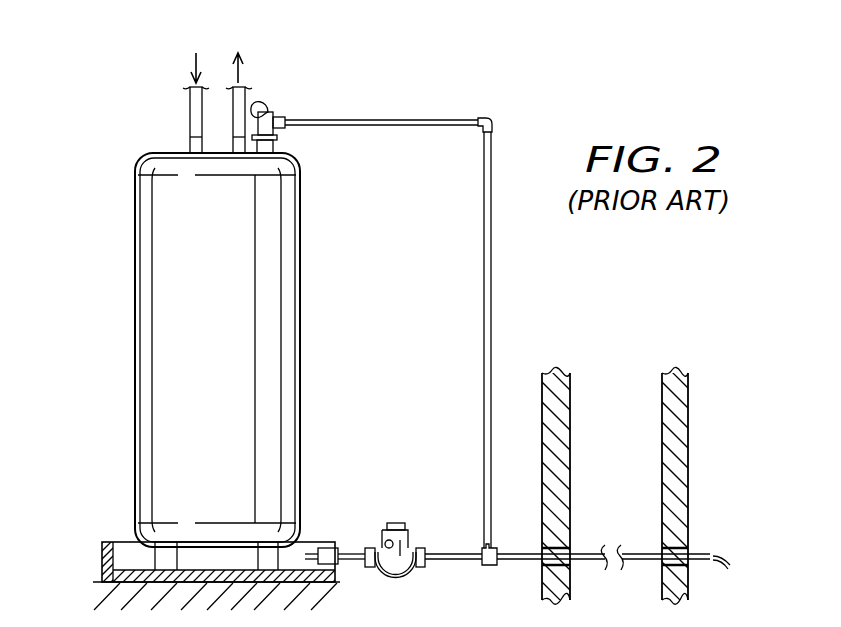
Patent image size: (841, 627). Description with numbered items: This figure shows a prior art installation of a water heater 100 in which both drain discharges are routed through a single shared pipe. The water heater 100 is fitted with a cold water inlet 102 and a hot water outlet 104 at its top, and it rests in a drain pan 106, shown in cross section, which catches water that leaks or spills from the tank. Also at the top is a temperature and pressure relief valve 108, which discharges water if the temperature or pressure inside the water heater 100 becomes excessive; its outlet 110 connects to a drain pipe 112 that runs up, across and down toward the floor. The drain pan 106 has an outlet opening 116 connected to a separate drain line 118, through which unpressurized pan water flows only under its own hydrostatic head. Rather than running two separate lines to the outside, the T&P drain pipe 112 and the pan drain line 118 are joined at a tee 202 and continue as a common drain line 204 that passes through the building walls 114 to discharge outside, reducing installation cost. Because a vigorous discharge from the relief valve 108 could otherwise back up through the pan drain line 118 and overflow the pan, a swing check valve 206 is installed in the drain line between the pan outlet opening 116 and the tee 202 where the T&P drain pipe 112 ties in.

The water heater 100 is at (135, 280).
The cold water inlet 102 is at (188, 110).
The hot water outlet 104 is at (228, 104).
The drain pan 106 is at (102, 558).
The temperature and pressure relief valve 108 is at (262, 104).
The outlet 110 is at (283, 116).
The drain pipe 112 is at (492, 250).
The building walls 114 is at (570, 410).
The outlet opening 116 is at (320, 548).
The drain line 118 is at (444, 562).
The tee 202 is at (492, 566).
The common drain line 204 is at (595, 565).
The swing check valve 206 is at (396, 522).